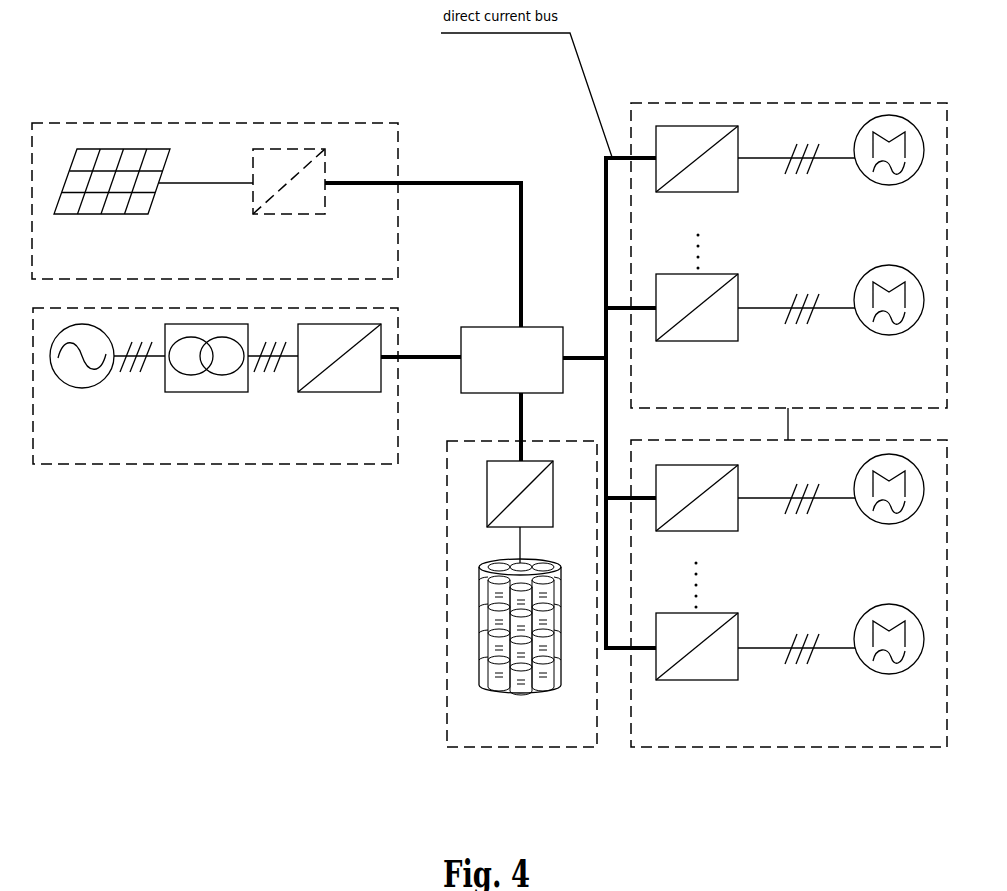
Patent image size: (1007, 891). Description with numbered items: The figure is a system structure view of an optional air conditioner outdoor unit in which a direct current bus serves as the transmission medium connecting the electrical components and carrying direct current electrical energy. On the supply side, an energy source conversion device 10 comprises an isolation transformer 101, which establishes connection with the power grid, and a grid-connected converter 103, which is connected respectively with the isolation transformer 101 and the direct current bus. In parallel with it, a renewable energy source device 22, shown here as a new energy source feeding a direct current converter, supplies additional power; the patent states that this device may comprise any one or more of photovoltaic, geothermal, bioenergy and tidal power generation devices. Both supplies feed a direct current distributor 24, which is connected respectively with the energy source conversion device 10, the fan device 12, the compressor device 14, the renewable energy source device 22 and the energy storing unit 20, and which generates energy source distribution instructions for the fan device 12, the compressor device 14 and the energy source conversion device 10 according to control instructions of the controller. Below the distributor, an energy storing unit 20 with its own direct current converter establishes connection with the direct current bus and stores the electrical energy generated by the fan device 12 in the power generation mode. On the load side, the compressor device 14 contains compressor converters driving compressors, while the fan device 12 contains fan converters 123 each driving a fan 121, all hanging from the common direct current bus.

The renewable energy source device 22 is at (277, 201).
The energy source conversion device 10 is at (247, 386).
The isolation transformer 101 is at (199, 377).
The grid-connected converter 103 is at (330, 377).
The direct current distributor 24 is at (534, 321).
The energy storing unit 20 is at (522, 594).
The compressor device 14 is at (789, 255).
The fan device 12 is at (789, 593).
The fan converter 123 is at (699, 585).
The fan 121 is at (889, 579).